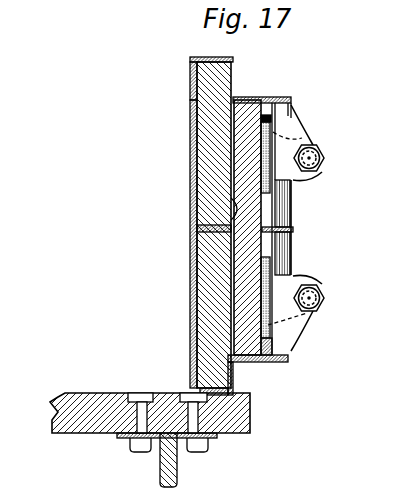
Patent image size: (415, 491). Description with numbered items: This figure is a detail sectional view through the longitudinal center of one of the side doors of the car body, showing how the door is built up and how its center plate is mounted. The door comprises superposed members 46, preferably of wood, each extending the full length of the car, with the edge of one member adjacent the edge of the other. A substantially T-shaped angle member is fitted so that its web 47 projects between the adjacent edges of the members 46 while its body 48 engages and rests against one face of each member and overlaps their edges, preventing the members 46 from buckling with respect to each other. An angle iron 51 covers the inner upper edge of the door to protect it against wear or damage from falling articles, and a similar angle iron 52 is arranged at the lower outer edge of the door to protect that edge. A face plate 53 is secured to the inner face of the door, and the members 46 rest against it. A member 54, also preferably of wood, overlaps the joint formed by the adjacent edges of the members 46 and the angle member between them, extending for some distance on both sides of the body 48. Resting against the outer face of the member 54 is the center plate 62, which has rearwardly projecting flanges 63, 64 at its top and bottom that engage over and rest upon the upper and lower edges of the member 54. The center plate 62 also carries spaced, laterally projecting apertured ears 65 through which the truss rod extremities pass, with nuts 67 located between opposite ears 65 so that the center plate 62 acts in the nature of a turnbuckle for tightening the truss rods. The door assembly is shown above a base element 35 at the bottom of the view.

The base plate 35 is at (90, 400).
The members 46 is at (213, 157).
The web 47 is at (203, 224).
The body 48 is at (232, 196).
The angle iron 51 is at (188, 76).
The angle iron 52 is at (233, 393).
The face plate 53 is at (190, 128).
The member 54 is at (290, 187).
The center plate 62 is at (272, 98).
The rearwardly projecting flange 63 is at (248, 100).
The rearwardly projecting flange 64 is at (250, 362).
The laterally projecting ears 65 is at (300, 134).
The nuts 67 is at (322, 152).